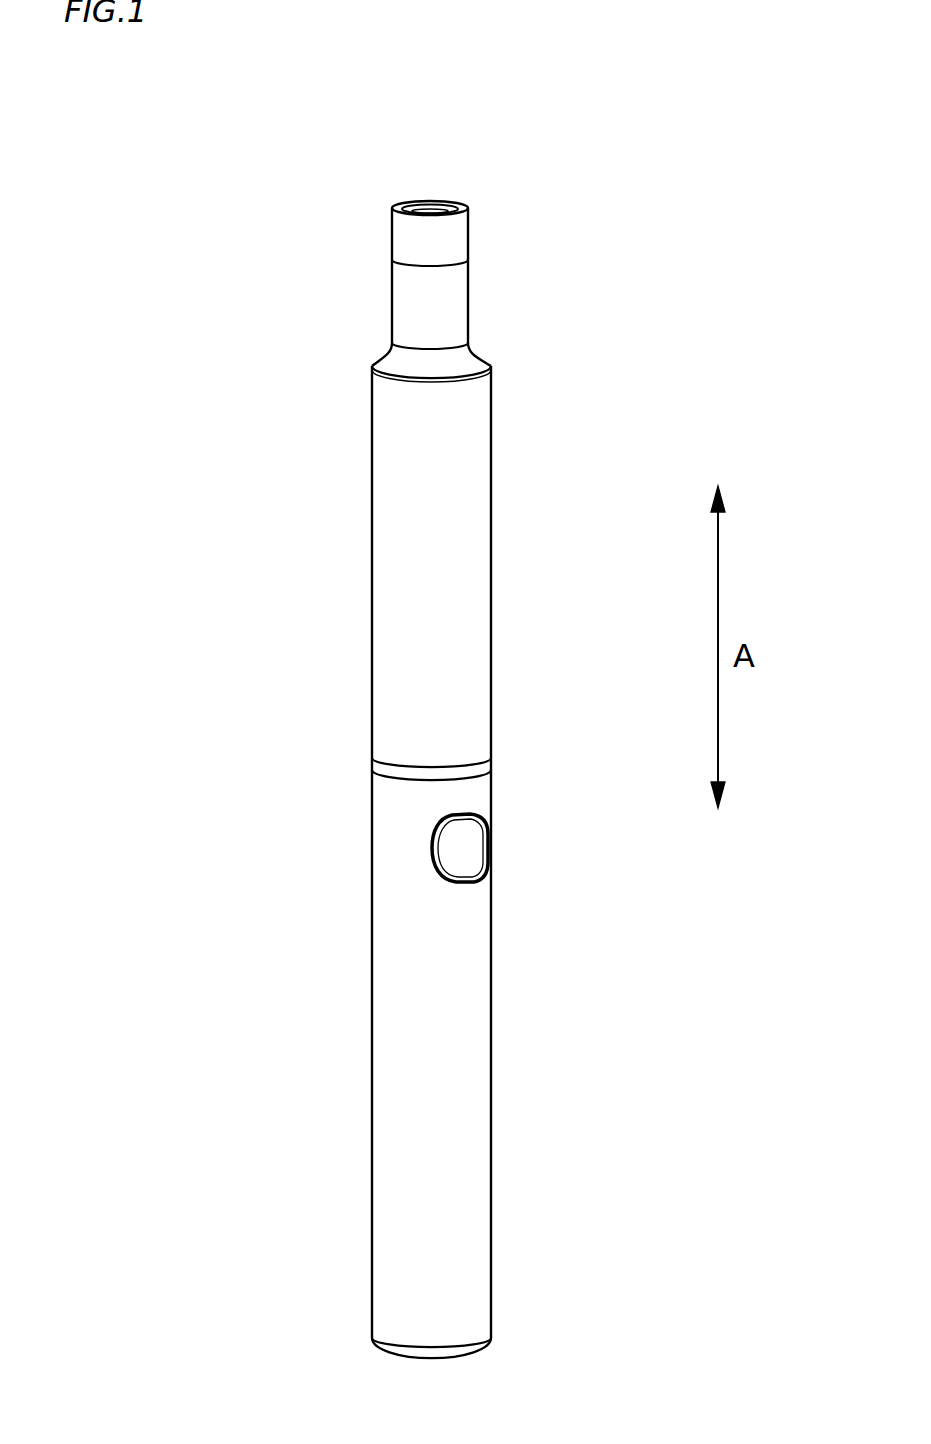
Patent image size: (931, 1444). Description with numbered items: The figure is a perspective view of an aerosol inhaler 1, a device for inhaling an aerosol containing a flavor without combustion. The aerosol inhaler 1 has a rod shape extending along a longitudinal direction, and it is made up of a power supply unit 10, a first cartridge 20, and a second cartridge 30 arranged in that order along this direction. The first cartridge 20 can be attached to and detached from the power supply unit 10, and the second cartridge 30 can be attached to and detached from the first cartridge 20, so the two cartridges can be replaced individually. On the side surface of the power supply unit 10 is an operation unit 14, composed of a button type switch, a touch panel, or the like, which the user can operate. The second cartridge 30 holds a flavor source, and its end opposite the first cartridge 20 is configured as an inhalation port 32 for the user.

The aerosol inhaler 1 is at (648, 143).
The power supply unit 10 is at (467, 1120).
The operation unit 14 is at (470, 848).
The first cartridge 20 is at (405, 637).
The second cartridge 30 is at (452, 238).
The inhalation port 32 is at (430, 206).